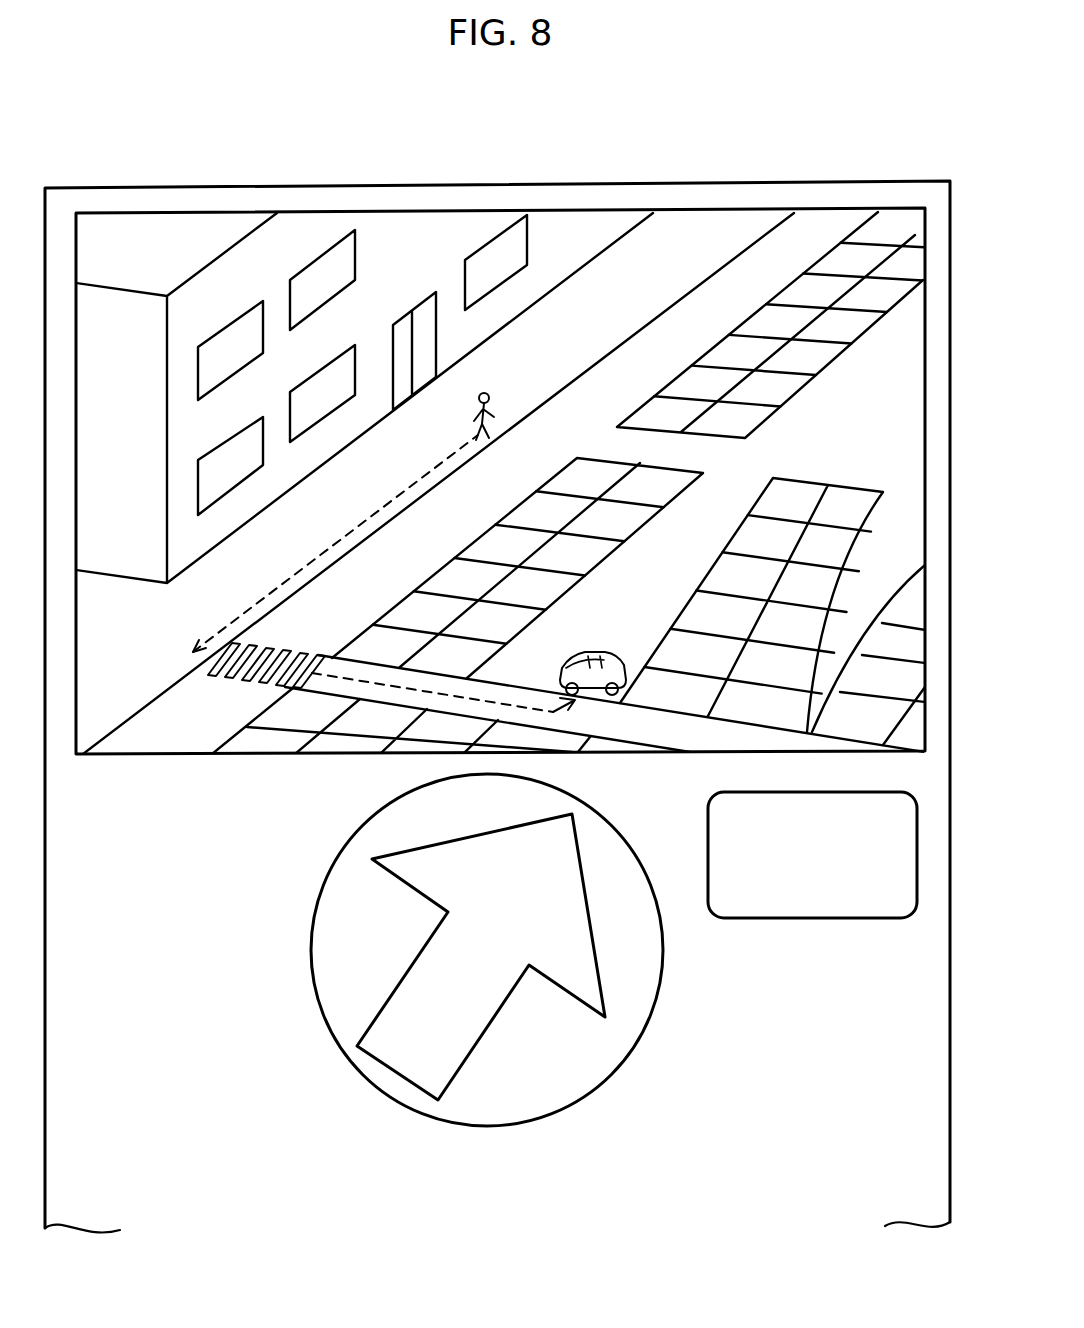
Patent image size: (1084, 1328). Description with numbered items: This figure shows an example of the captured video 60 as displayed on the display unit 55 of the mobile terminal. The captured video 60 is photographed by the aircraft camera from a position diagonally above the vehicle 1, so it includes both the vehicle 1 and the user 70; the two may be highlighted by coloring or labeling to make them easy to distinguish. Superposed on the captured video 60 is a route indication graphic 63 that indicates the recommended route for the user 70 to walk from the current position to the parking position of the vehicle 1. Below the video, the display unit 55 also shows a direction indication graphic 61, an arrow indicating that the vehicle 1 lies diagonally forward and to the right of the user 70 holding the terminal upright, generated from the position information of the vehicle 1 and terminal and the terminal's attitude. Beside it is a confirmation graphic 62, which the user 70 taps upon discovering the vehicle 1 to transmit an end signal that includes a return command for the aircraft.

The display unit 55 is at (883, 182).
The captured video 60 is at (594, 209).
The direction indication graphic 61 is at (312, 934).
The confirmation graphic 62 is at (815, 919).
The route indication graphic 63 is at (222, 632).
The user 70 is at (501, 380).
The vehicle 1 is at (621, 640).